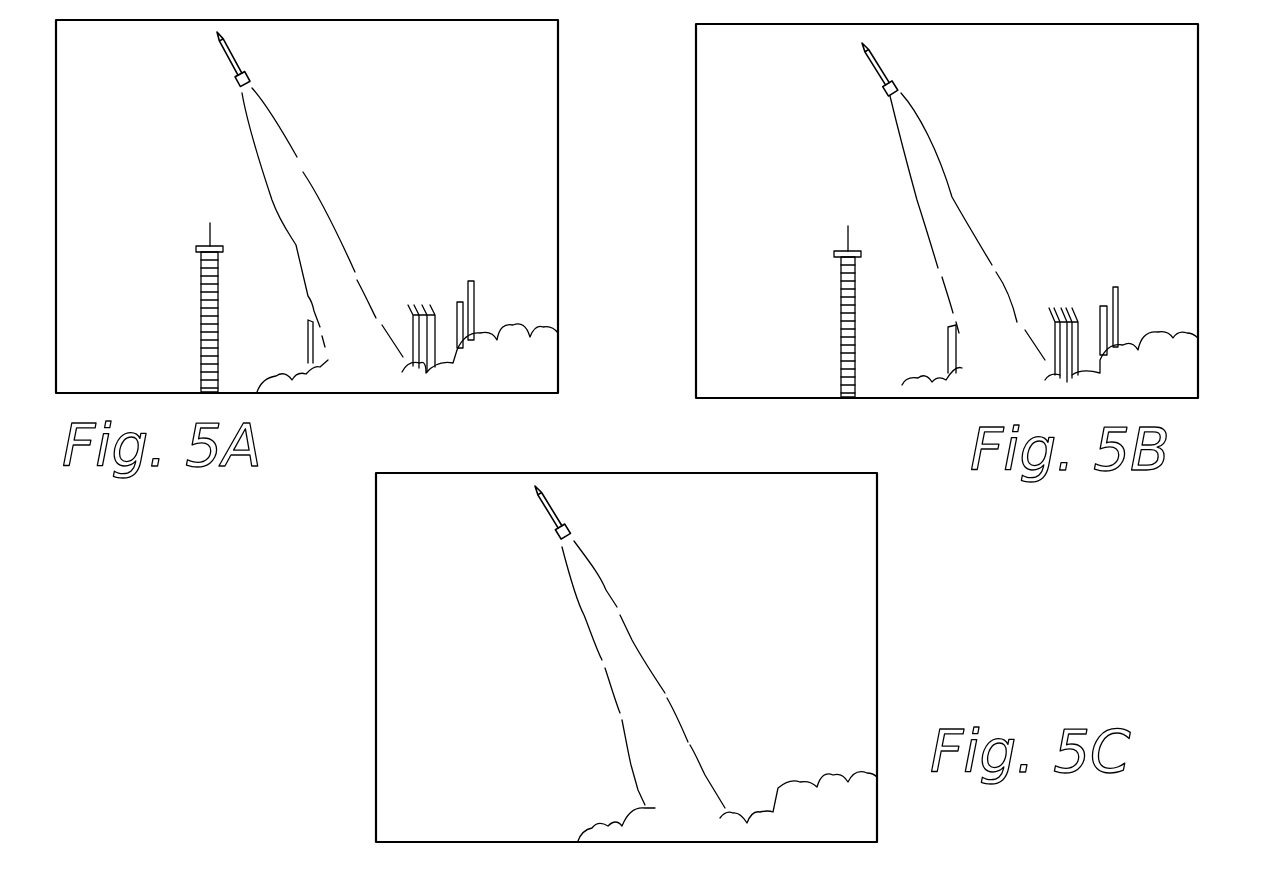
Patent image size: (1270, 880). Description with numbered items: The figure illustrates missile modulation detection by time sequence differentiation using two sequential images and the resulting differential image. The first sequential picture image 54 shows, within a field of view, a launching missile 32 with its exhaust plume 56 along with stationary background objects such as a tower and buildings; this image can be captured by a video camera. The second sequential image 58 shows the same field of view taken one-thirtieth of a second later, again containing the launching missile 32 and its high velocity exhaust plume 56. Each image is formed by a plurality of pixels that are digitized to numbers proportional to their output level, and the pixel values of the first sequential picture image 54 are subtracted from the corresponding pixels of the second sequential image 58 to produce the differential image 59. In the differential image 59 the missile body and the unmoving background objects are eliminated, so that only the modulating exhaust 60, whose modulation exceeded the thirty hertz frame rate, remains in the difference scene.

In FIG. 5A, the launching missile 32 is at (228, 66).
In FIG. 5B, the launching missile 32 is at (876, 72).
In FIG. 5C, the launching missile 32 is at (550, 511).
In FIG. 5A, the first sequential picture image 54 is at (558, 224).
In FIG. 5A, the exhaust plume 56 is at (337, 270).
In FIG. 5B, the exhaust plume 56 is at (980, 278).
In FIG. 5B, the second sequential image 58 is at (1198, 224).
In FIG. 5C, the differential image 59 is at (877, 647).
In FIG. 5C, the modulating exhaust 60 is at (618, 604).